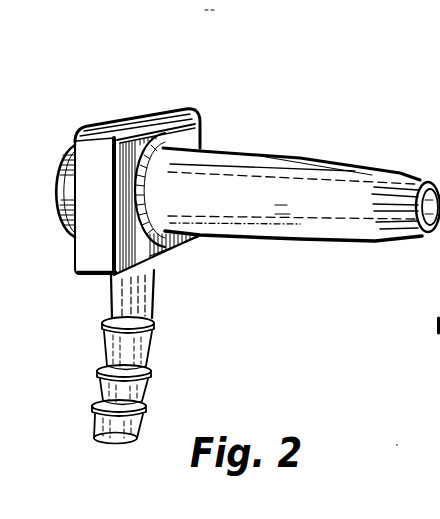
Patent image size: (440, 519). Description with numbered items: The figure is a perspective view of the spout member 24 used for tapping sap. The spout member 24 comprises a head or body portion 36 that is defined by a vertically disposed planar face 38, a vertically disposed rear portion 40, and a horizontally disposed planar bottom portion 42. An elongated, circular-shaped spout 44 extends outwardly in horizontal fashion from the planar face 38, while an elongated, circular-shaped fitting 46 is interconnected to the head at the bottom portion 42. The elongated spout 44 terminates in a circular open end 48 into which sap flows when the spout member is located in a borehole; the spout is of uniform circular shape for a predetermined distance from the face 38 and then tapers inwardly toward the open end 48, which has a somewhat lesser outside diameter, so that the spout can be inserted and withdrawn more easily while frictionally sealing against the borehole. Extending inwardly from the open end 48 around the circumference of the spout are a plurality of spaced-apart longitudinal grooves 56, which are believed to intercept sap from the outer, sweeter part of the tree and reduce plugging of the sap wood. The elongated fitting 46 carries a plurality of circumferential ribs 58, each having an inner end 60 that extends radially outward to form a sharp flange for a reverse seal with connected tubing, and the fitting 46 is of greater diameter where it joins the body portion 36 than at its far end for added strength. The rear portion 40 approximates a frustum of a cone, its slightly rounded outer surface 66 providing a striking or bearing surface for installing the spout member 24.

The spout member 24 is at (219, 128).
The head or body portion 36 is at (115, 114).
The vertically disposed planar face 38 is at (183, 252).
The vertically disposed rear portion 40 is at (62, 193).
The horizontally disposed planar bottom portion 42 is at (96, 282).
The elongated spout 44 is at (303, 151).
The elongated fitting 46 is at (105, 309).
The open end 48 is at (439, 161).
The longitudinal grooves 56 is at (391, 236).
The circumferential ribs 58 is at (153, 357).
The inner end 60 is at (140, 405).
The outer surface 66 is at (57, 190).